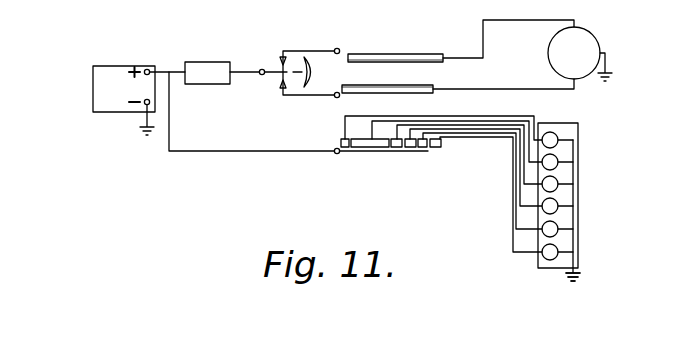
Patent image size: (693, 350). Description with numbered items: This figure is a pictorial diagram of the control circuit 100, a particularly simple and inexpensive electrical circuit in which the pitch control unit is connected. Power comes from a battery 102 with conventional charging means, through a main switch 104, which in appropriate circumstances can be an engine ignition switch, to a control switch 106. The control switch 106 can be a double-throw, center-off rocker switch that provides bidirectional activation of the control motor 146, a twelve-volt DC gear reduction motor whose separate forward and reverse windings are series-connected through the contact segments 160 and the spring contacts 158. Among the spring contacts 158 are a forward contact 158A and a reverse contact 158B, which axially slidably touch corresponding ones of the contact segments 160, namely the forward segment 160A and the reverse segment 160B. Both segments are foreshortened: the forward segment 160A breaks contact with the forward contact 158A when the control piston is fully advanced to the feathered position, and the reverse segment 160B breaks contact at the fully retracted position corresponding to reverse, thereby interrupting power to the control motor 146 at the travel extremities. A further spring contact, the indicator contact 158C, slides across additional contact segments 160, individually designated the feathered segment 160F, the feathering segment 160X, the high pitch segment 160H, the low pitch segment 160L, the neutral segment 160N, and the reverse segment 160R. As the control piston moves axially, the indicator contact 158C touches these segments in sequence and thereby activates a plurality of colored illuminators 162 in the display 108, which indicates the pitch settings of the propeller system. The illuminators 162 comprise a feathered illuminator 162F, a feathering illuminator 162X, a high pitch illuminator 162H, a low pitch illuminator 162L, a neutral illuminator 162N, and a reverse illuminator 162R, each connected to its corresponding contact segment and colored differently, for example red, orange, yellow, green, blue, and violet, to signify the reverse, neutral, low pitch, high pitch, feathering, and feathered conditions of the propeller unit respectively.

The control circuit 100 is at (224, 194).
The battery 102 is at (100, 112).
The main switch 104 is at (192, 84).
The control switch 106 is at (272, 70).
The display 108 is at (578, 272).
The control motor 146 is at (547, 53).
The spring contacts 158 is at (349, 48).
The forward contact 158A is at (423, 53).
The reverse contact 158B is at (423, 93).
The indicator contact 158C is at (350, 152).
The contact segments 160 is at (417, 63).
The forward segment 160A is at (458, 22).
The reverse segment 160B is at (435, 85).
The feathered contact segment 160F is at (342, 139).
The feathering contact segment 160X is at (360, 147).
The high pitch contact segment 160H is at (398, 147).
The low pitch contact segment 160L is at (406, 147).
The neutral contact segment 160N is at (455, 175).
The reverse contact segment 160R is at (433, 147).
The colored illuminators 162 is at (521, 204).
The feathered illuminator 162F is at (540, 141).
The feathering illuminator 162X is at (540, 163).
The high pitch illuminator 162H is at (540, 185).
The low pitch illuminator 162L is at (540, 207).
The neutral illuminator 162N is at (540, 230).
The reverse illuminator 162R is at (553, 265).